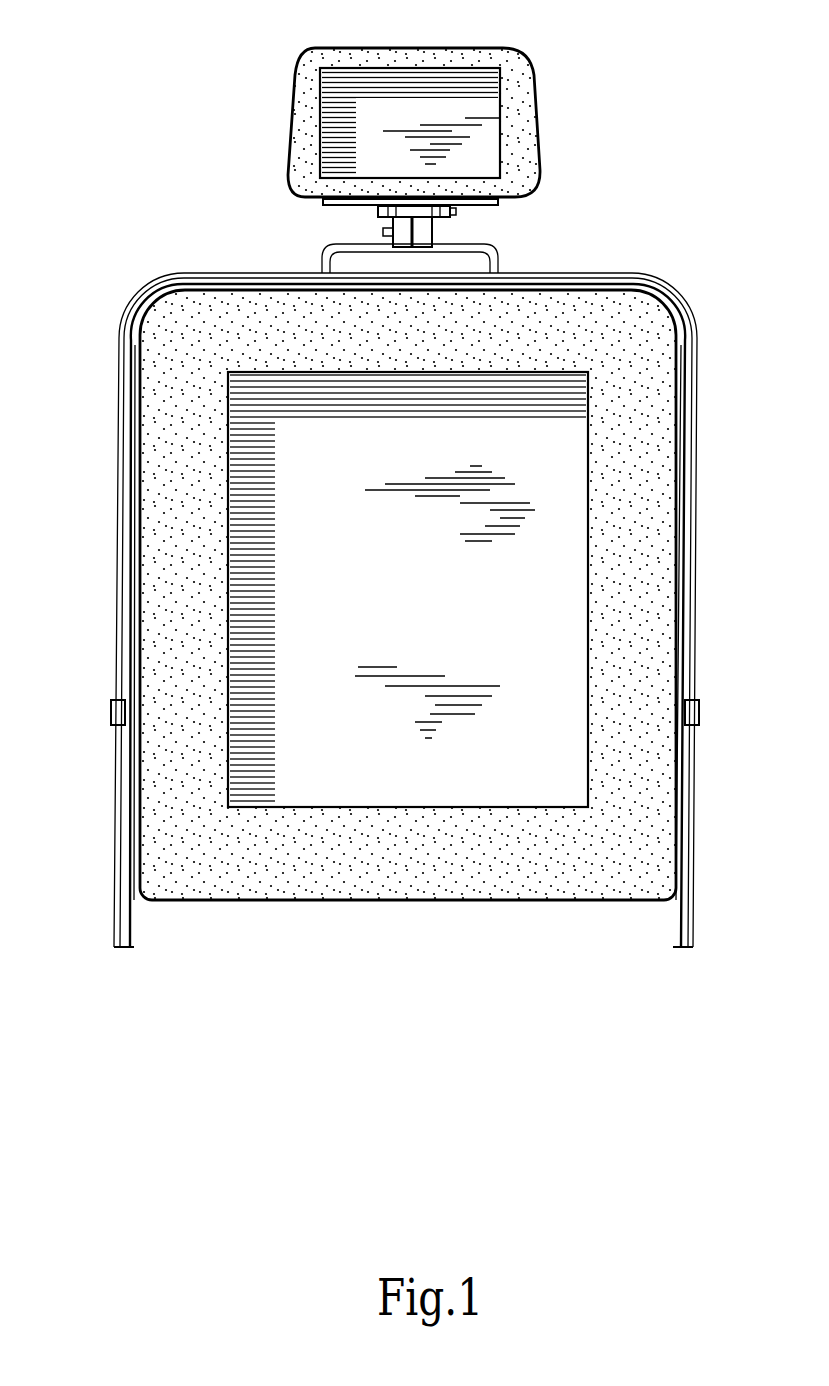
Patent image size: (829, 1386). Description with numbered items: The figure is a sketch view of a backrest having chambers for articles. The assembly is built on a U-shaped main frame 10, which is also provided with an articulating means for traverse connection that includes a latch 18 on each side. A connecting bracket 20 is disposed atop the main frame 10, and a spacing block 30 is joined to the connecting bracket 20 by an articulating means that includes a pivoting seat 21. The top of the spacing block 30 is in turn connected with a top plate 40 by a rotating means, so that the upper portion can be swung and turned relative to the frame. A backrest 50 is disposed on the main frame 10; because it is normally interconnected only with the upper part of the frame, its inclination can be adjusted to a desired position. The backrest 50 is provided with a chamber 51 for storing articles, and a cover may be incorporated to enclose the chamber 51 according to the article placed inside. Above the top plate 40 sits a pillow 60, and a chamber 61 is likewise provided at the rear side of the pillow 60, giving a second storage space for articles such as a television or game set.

The main frame 10 is at (125, 385).
The latch 18 is at (111, 718).
The connecting bracket 20 is at (316, 265).
The pivoting seat 21 is at (385, 230).
The spacing block 30 is at (430, 228).
The top plate 40 is at (490, 213).
The backrest 50 is at (640, 527).
The chamber 51 is at (410, 783).
The pillow 60 is at (300, 105).
The chamber 61 is at (428, 100).